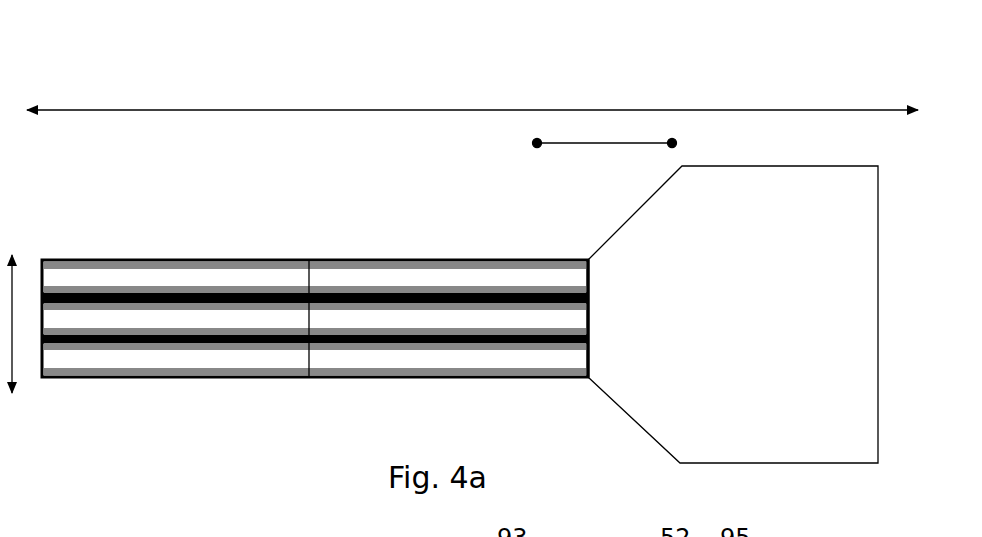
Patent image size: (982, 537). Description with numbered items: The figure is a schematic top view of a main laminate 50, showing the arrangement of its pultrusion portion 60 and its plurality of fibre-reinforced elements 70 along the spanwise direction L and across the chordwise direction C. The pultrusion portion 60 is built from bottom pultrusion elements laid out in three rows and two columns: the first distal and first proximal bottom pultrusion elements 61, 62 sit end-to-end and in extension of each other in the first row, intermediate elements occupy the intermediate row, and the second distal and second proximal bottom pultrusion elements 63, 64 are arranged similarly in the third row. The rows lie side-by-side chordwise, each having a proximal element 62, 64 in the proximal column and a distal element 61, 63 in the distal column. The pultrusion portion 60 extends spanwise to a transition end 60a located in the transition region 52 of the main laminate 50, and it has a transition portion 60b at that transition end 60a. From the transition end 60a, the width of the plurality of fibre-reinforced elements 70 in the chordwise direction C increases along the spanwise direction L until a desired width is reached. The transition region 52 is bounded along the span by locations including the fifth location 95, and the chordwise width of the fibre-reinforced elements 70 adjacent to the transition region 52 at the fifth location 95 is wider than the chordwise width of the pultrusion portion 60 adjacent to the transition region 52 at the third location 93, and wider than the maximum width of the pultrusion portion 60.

The main laminate 50 is at (465, 170).
The transition region 52 is at (642, 89).
The pultrusion portion 60 is at (386, 338).
The transition end 60a is at (588, 357).
The transition portion 60b is at (537, 290).
The first distal bottom pultrusion element 61 is at (455, 278).
The first proximal bottom pultrusion element 62 is at (187, 278).
The second distal bottom pultrusion element 63 is at (483, 365).
The second proximal bottom pultrusion element 64 is at (170, 352).
The plurality of fibre-reinforced elements 70 is at (736, 434).
The third location 93 is at (537, 143).
The fifth location 95 is at (673, 143).
The chordwise direction C is at (17, 352).
The spanwise direction L is at (828, 107).